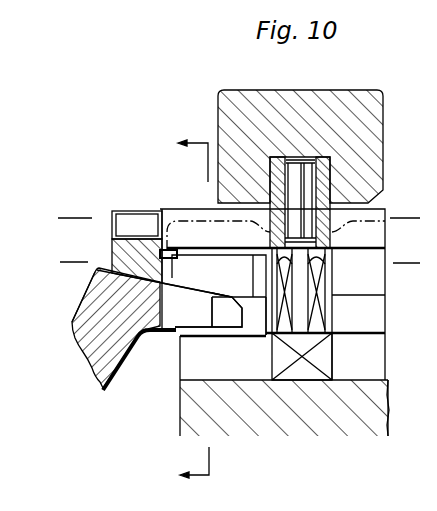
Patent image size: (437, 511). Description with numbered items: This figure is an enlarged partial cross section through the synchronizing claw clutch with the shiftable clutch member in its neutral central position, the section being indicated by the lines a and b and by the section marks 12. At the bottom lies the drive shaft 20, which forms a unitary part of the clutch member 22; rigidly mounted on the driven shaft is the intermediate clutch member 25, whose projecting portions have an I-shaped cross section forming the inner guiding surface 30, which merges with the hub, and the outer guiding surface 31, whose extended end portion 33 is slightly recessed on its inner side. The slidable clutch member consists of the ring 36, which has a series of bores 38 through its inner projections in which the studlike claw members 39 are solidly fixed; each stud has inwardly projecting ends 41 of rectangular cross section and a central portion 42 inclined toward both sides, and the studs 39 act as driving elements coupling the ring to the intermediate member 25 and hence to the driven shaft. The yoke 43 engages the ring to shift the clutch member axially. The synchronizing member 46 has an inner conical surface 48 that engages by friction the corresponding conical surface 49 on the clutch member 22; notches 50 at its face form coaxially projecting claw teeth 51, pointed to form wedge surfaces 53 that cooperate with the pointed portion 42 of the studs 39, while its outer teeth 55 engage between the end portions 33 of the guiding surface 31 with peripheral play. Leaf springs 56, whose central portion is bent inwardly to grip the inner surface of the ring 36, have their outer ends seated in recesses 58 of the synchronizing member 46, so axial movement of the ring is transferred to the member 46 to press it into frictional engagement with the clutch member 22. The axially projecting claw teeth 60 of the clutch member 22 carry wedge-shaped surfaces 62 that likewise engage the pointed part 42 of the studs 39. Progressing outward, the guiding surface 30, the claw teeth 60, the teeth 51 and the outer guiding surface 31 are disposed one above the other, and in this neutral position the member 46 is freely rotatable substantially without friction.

The yoke 43 is at (291, 97).
The bores 38 is at (318, 177).
The ring 36 is at (272, 190).
The outer guiding surfaces 31 is at (173, 216).
The teeth 55 is at (112, 236).
The extended end portion 33 is at (149, 218).
The synchronizing member 46 is at (117, 250).
The recesses 58 is at (163, 265).
The leaf springs 56 is at (198, 228).
The inner conical surfaces 48 is at (168, 283).
The conical surfaces 49 is at (162, 298).
The clutch member 22 is at (112, 283).
The drive shaft 20 is at (102, 368).
The claw teeth 60 is at (171, 329).
The notches 50 is at (228, 287).
The claw teeth 51 is at (228, 287).
The wedge-shaped surfaces 62 is at (236, 318).
The wedge surfaces 53 is at (262, 294).
The central portion 42 is at (312, 280).
The studlike claw members 39 is at (333, 313).
The inwardly projecting ends 41 is at (327, 360).
The inner guiding surfaces 30 is at (372, 368).
The intermediate clutch member 25 is at (327, 427).
The section line 12 is at (193, 312).
The section line a- a is at (236, 217).
The section line b- b is at (237, 263).